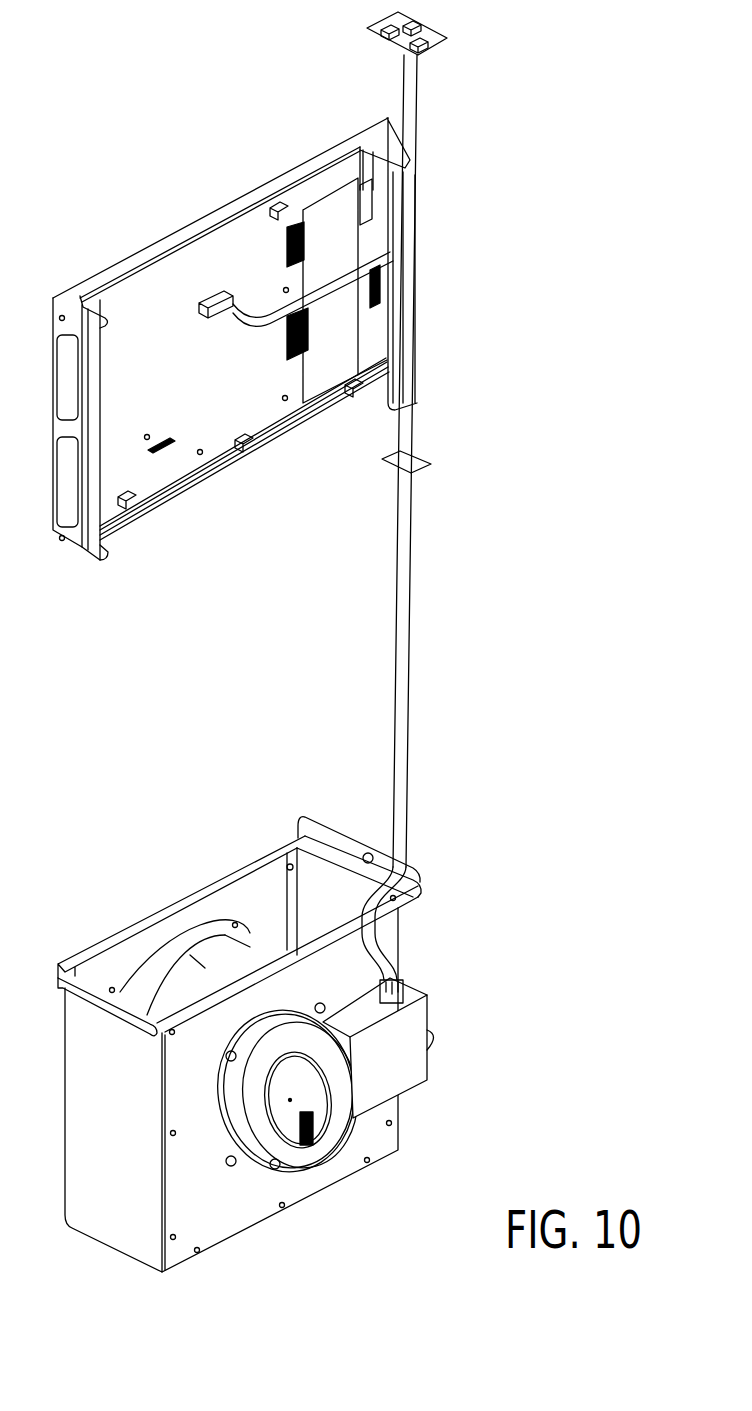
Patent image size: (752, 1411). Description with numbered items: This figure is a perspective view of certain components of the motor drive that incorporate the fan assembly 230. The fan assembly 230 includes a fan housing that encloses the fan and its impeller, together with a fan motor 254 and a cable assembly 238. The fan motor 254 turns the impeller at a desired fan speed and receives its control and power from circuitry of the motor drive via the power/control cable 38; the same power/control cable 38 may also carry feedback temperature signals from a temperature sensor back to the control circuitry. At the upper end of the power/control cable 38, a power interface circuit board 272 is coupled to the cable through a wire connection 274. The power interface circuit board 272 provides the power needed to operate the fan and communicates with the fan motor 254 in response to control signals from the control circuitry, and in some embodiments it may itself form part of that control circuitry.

The power/control cable 38 is at (407, 648).
The fan assembly 230 is at (282, 1044).
The cable assembly 238 is at (398, 1063).
The fan motor 254 is at (322, 1175).
The power interface circuit board 272 is at (213, 303).
The wire connection 274 is at (263, 319).